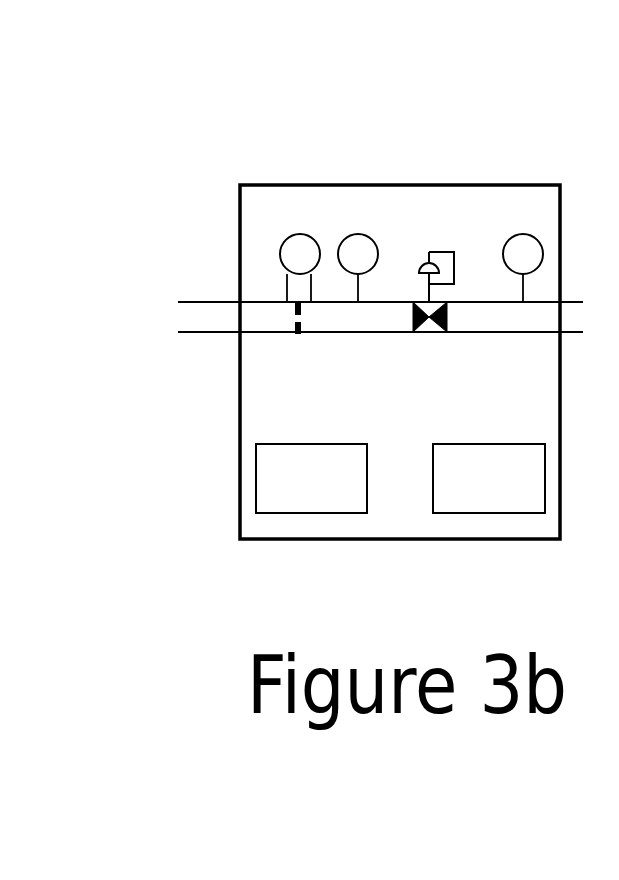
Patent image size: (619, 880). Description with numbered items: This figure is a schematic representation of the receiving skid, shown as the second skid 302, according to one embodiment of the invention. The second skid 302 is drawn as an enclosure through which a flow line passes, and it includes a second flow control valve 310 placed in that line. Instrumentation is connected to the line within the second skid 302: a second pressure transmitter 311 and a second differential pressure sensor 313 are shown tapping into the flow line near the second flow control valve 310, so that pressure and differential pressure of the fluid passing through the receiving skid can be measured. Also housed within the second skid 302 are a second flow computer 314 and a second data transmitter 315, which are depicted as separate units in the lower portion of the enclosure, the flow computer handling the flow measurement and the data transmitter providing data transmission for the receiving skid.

The second skid 302 is at (400, 391).
The second flow control valve 310 is at (422, 368).
The second pressure transmitter 311 is at (507, 208).
The second differential pressure sensor 313 is at (275, 209).
The second flow computer 314 is at (311, 478).
The second data transmitter 315 is at (489, 478).